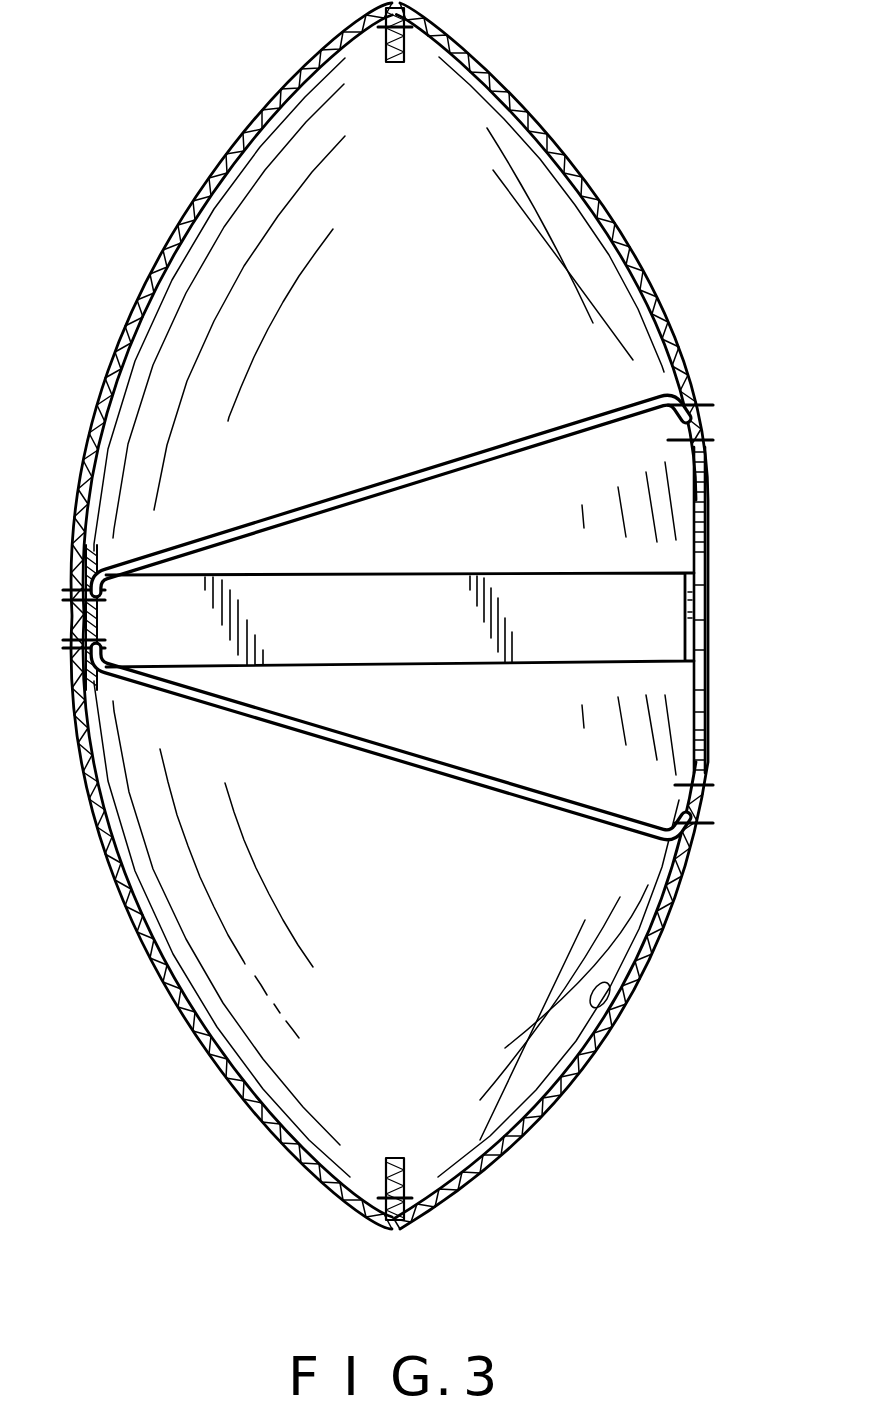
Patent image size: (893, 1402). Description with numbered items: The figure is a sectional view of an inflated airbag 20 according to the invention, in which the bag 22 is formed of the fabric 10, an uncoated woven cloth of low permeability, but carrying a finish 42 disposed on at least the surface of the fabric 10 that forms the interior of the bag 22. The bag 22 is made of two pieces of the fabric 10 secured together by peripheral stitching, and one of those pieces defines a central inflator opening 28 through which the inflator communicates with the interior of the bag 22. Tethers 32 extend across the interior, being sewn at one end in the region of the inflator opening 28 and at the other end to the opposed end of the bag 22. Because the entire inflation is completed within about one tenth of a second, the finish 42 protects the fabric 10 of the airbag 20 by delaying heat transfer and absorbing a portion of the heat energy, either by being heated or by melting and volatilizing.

The fabric 10 is at (530, 1120).
The airbag 20 is at (183, 170).
The bag 22 is at (187, 1022).
The inflator opening 28 is at (711, 503).
The tethers 32 is at (536, 430).
The finish 42 is at (623, 990).